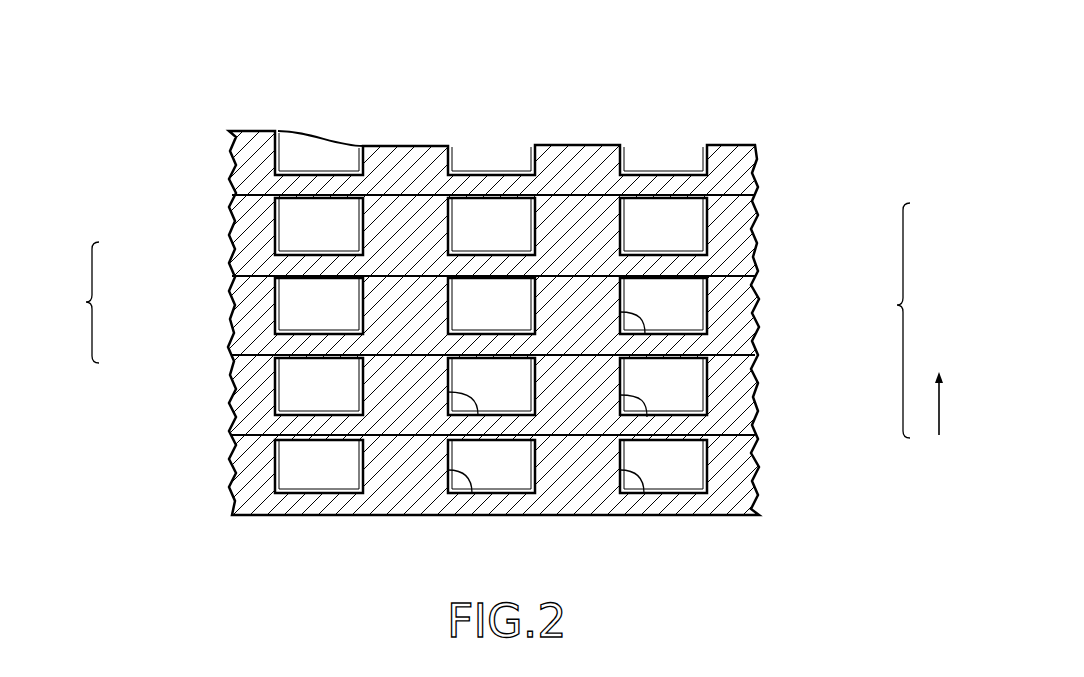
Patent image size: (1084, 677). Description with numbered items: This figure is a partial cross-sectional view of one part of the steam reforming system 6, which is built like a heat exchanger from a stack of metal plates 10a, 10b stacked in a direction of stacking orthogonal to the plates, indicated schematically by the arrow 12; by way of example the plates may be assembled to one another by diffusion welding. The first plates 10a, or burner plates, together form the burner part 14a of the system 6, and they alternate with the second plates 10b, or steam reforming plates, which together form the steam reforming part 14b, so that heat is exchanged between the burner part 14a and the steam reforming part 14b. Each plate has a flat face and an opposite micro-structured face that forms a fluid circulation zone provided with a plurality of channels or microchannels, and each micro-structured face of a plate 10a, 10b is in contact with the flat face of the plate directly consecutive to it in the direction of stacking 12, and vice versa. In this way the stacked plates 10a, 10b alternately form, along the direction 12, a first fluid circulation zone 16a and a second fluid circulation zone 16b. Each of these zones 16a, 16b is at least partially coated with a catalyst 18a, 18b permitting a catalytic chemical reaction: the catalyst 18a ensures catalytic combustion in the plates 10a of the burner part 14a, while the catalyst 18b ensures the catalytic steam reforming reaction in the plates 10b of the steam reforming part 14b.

The steam reforming system 6 is at (172, 147).
The first plates 10a is at (768, 180).
The second plates 10b is at (226, 237).
The direction of stacking 12 is at (939, 410).
The burner part 14a is at (928, 320).
The steam reforming part 14b is at (69, 302).
The first fluid circulation zone 16a is at (317, 152).
The second fluid circulation zone 16b is at (515, 384).
The catalyst 18a is at (452, 148).
The catalyst 18b is at (365, 221).